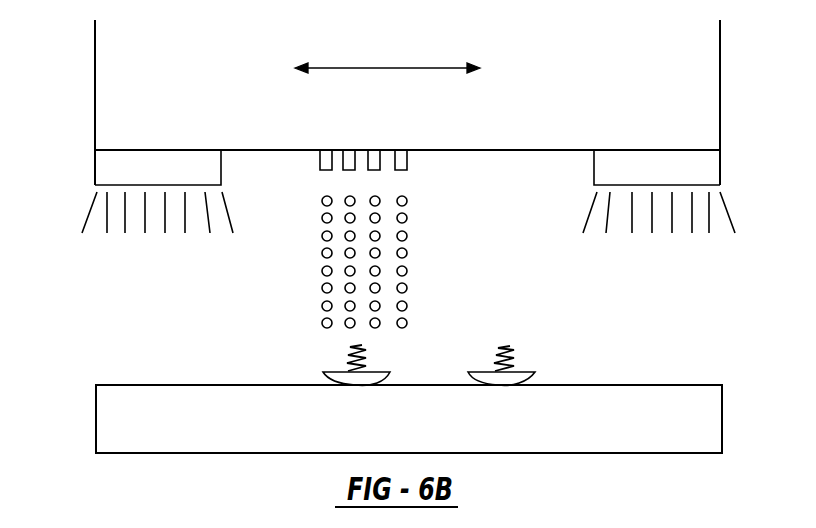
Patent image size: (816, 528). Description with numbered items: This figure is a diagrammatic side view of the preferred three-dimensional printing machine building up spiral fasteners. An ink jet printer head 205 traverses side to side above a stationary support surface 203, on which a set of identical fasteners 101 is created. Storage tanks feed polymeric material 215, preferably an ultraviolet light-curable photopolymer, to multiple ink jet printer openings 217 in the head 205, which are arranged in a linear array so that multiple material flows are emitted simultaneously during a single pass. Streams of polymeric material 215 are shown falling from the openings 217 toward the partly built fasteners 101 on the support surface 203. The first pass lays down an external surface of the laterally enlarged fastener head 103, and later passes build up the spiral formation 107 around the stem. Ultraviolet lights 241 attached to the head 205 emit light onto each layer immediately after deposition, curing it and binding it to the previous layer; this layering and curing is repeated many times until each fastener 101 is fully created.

The ink jet printer head 205 is at (720, 93).
The ultraviolet lights 241 is at (96, 168).
The ink jet printer openings 217 is at (403, 170).
The polymeric material 215 is at (407, 271).
The fastener 101 is at (325, 372).
The head 103 is at (535, 372).
The spiral formation 107 is at (497, 352).
The support surface 203 is at (660, 385).